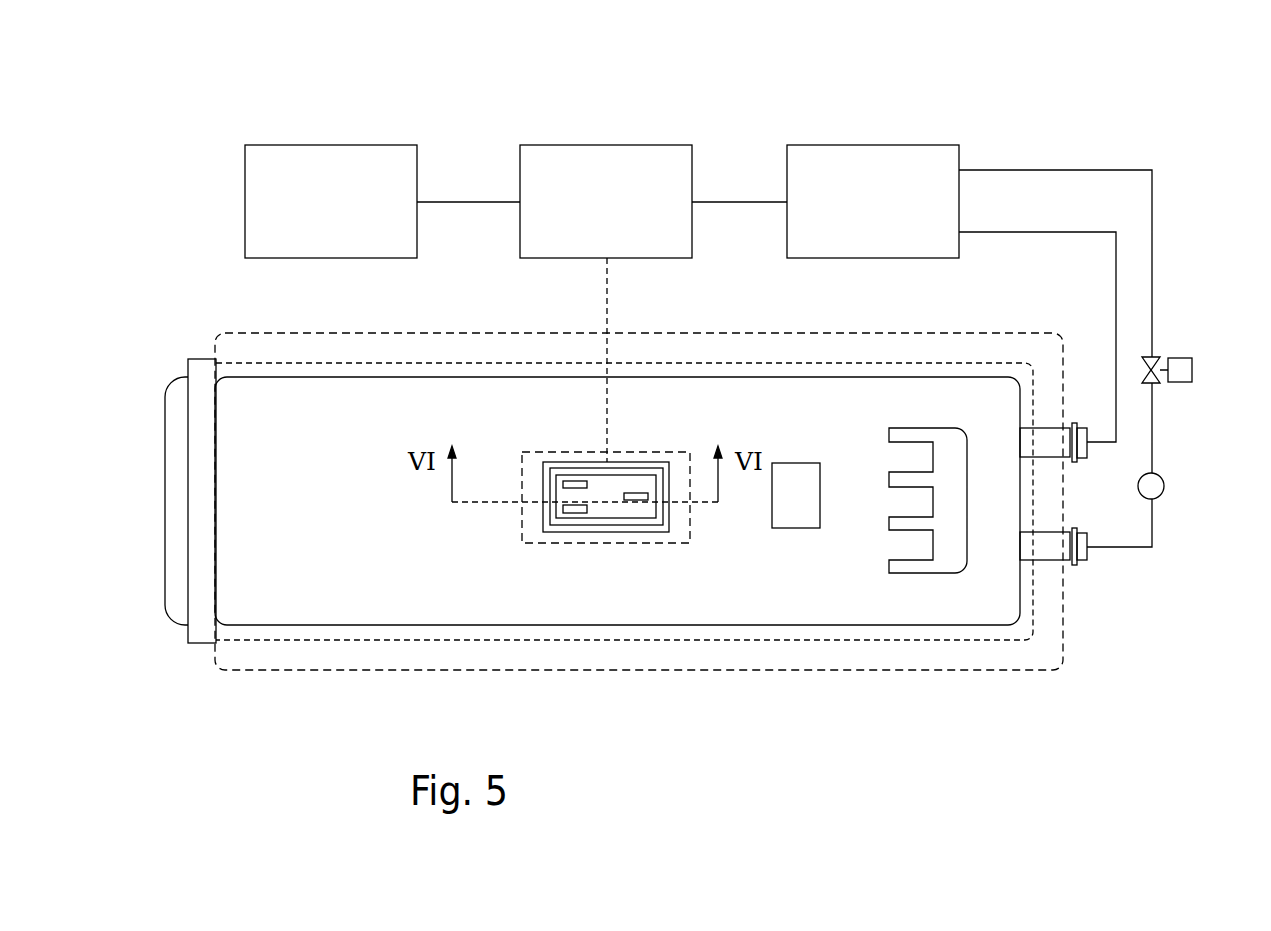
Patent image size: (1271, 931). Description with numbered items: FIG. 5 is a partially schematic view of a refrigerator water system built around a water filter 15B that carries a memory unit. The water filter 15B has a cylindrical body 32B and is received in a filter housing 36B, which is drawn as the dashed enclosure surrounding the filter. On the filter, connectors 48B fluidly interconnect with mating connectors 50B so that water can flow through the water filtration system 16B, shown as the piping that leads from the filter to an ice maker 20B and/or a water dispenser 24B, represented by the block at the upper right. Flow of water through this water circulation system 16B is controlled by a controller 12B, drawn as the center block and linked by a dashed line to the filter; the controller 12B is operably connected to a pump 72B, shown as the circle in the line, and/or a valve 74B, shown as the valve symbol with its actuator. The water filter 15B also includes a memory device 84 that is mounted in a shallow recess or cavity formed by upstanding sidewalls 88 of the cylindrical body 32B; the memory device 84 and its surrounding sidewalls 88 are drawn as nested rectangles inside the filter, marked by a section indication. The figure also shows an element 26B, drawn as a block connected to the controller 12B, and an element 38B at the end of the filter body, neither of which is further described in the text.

The controller 12B is at (595, 148).
The water filter 15B is at (735, 624).
The water filtration system 16B is at (1082, 168).
The ice maker 20B is at (910, 154).
The water dispenser 24B is at (848, 148).
The user interface 26B is at (343, 150).
The cylindrical body 32B is at (340, 624).
The filter housing 36B is at (605, 672).
The door 38B is at (175, 504).
The connectors 48B is at (1032, 427).
The connectors 50B is at (1043, 425).
The pump 72B is at (1164, 486).
The valve 74B is at (1155, 356).
The memory device 84 is at (597, 517).
The upstanding sidewalls 88 is at (540, 522).